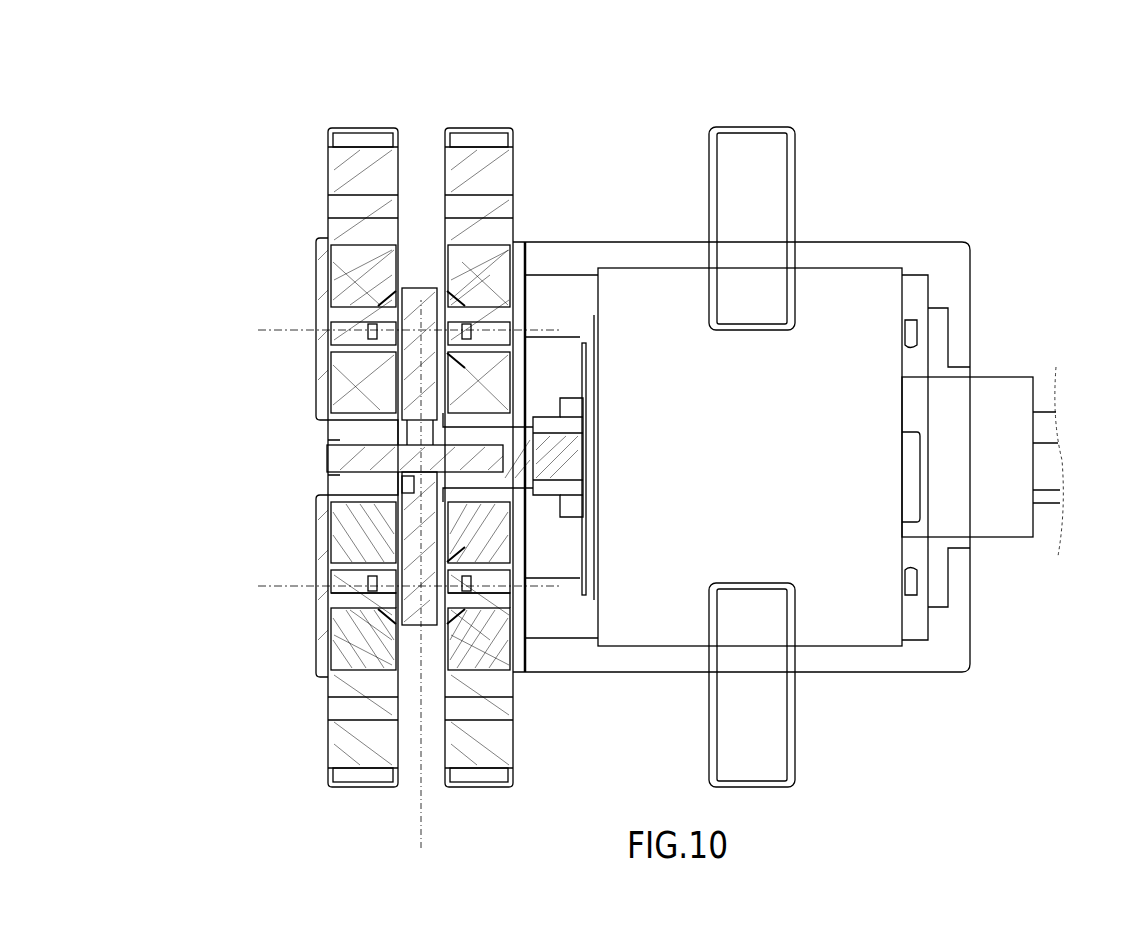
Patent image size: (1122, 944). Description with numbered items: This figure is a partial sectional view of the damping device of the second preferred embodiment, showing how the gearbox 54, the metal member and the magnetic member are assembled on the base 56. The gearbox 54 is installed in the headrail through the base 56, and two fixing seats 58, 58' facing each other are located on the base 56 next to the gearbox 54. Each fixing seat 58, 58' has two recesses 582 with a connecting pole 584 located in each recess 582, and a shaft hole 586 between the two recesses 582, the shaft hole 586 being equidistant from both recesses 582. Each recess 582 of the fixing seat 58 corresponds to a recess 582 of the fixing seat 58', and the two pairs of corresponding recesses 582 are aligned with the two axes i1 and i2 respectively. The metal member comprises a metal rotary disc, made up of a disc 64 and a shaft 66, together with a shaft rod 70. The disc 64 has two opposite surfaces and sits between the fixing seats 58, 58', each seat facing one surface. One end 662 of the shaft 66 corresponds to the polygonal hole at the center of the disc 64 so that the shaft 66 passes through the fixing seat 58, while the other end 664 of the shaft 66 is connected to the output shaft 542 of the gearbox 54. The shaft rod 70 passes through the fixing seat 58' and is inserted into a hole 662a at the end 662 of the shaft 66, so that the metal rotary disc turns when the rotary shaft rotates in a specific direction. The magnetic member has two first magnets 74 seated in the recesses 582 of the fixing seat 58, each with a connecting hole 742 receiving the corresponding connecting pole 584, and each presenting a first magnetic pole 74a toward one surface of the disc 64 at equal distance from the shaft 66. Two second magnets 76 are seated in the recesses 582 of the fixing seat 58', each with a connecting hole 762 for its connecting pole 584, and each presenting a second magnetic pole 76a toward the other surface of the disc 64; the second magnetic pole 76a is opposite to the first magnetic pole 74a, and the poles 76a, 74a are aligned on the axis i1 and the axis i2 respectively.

The gearbox 54 is at (836, 265).
The base 56 is at (933, 240).
The fixing seat 58 is at (465, 405).
The fixing seat 58' is at (361, 405).
The disc 64 is at (423, 286).
The shaft 66 is at (520, 452).
The end of the shaft 662 is at (412, 481).
The hole 662a is at (428, 589).
The another end of the shaft 664 is at (572, 397).
The shaft rod 70 is at (328, 462).
The first magnet 74 is at (465, 218).
The first magnetic pole 74a is at (466, 385).
The connecting hole 742 is at (450, 610).
The second magnet 76 is at (362, 264).
The second magnetic pole 76a is at (393, 378).
The connecting hole 762 is at (382, 608).
The recess 582 is at (338, 240).
The connecting pole 584 is at (353, 603).
The shaft hole 586 is at (343, 440).
The output shaft 542 is at (586, 345).
The axis i1 is at (258, 330).
The axis i2 is at (265, 586).